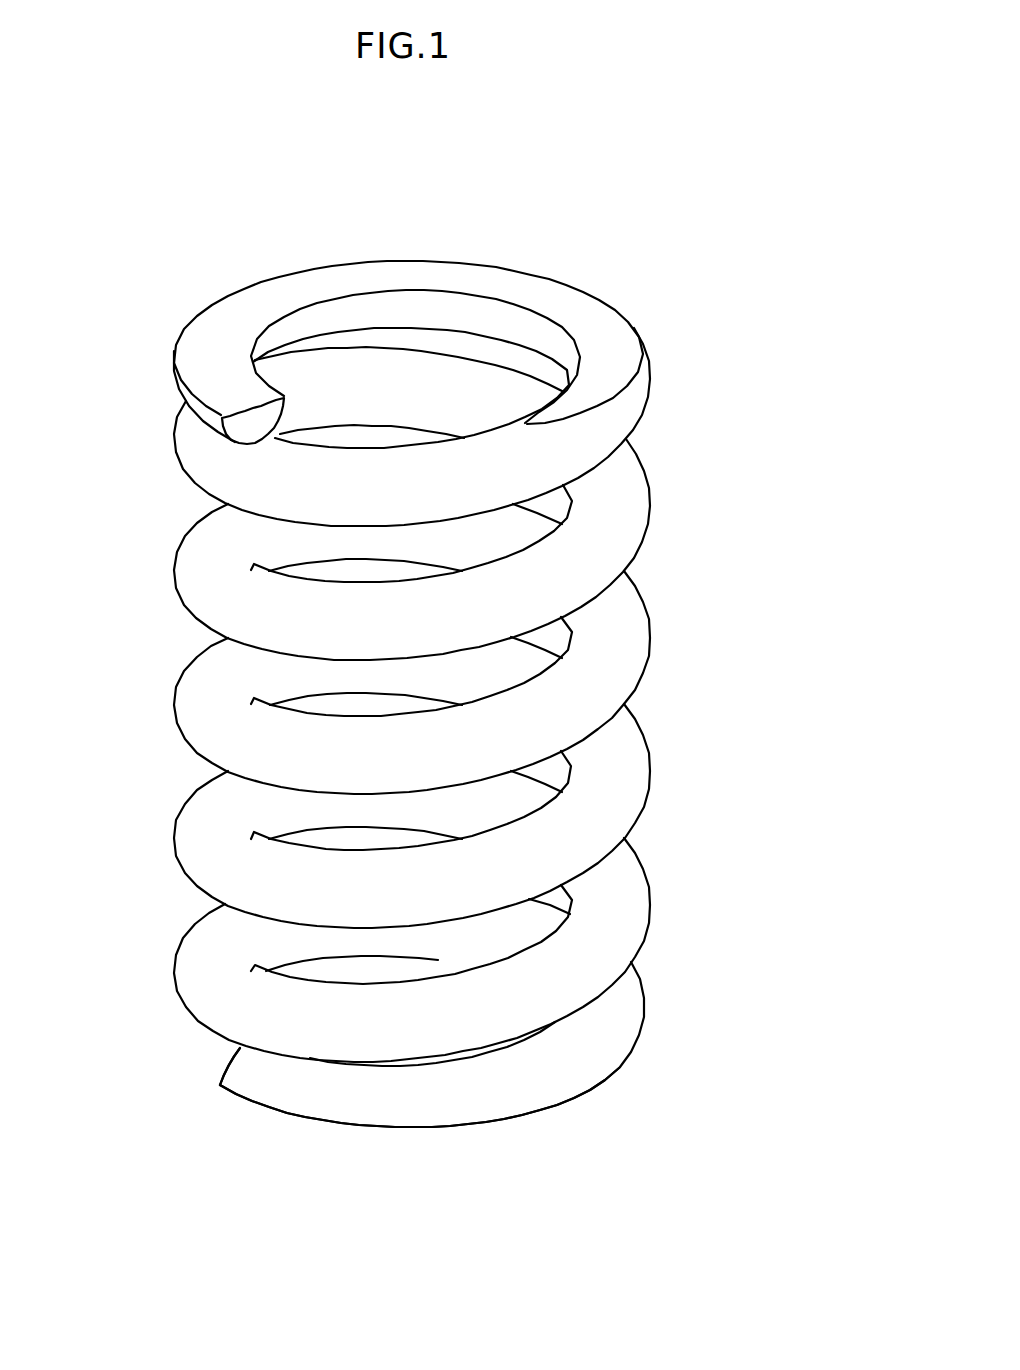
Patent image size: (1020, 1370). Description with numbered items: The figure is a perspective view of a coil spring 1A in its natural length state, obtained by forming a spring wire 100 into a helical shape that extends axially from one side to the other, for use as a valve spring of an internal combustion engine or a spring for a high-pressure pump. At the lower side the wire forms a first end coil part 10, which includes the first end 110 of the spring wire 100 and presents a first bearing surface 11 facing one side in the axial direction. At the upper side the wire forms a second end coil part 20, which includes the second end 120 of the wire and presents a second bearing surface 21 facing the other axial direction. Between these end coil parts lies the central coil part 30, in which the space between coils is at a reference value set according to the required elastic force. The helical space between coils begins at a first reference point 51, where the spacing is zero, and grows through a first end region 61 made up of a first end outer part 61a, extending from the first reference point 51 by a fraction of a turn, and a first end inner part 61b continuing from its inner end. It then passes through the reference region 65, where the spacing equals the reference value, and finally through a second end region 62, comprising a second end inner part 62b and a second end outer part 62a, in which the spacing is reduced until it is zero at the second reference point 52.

The coil spring 1A is at (612, 197).
The spring wire 100 is at (185, 693).
The first end coil part 10 is at (683, 1050).
The first bearing surface 11 is at (376, 1142).
The second end coil part 20 is at (647, 292).
The second bearing surface 21 is at (401, 266).
The central coil part 30 is at (709, 635).
The first reference point 51 is at (280, 1068).
The second reference point 52 is at (243, 437).
The first end region 61 is at (530, 1052).
The first end outer part 61a is at (459, 1075).
The first end inner part 61b is at (608, 998).
The second end region 62 is at (492, 341).
The second end outer part 62a is at (314, 329).
The second end inner part 62b is at (615, 474).
The reference region 65 is at (630, 600).
The first end 110 is at (250, 1097).
The second end 120 is at (245, 388).